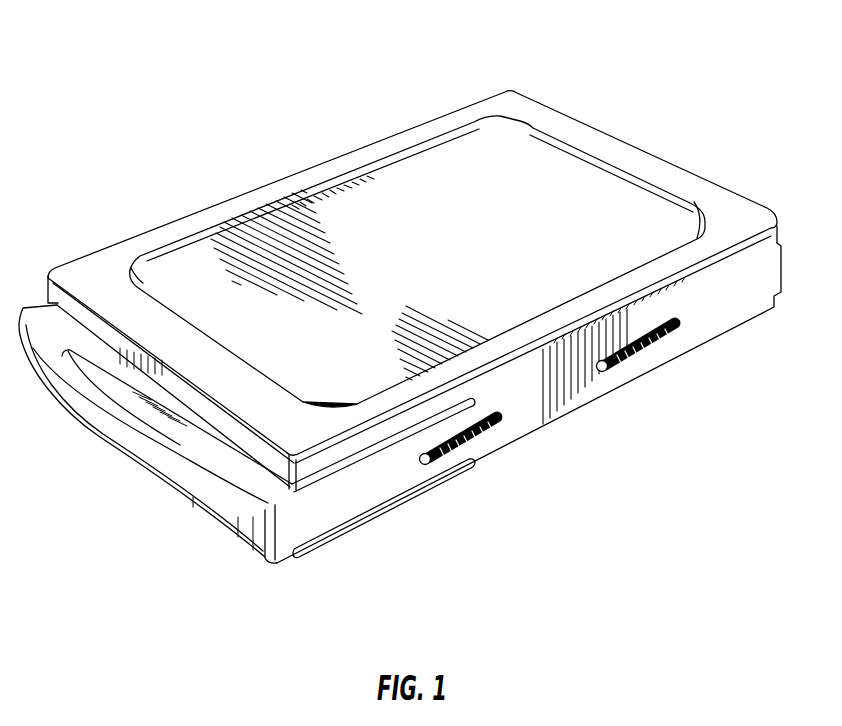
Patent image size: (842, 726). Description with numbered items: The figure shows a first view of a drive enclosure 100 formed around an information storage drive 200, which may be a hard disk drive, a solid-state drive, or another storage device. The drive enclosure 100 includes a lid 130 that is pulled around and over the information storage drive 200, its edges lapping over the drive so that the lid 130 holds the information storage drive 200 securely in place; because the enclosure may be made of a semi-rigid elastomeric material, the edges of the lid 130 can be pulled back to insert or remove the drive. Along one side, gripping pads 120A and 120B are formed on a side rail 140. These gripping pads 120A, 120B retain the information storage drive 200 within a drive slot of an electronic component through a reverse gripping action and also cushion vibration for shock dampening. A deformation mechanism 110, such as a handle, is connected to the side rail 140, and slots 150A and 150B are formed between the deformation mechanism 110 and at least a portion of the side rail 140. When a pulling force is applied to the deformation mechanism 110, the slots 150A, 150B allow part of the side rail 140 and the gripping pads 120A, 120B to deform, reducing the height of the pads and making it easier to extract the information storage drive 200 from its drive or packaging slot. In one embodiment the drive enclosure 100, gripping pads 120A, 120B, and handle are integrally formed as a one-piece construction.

The drive enclosure 100 is at (214, 100).
The deformation mechanism 110 is at (104, 452).
The gripping pad 120A is at (473, 433).
The gripping pad 120B is at (643, 353).
The lid 130 is at (623, 157).
The side rail 140 is at (720, 277).
The slot 150A is at (340, 475).
The slot 150B is at (373, 517).
The information storage drive 200 is at (404, 176).